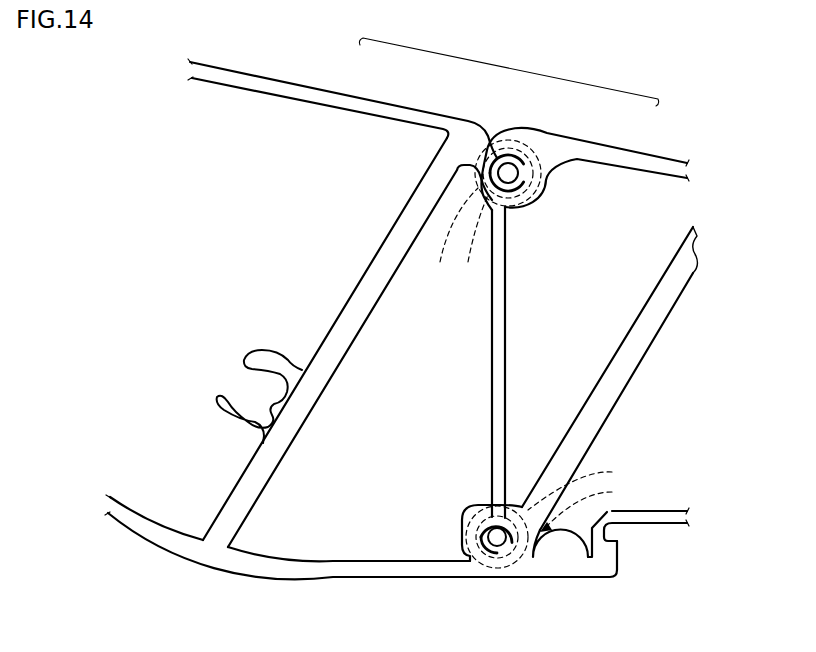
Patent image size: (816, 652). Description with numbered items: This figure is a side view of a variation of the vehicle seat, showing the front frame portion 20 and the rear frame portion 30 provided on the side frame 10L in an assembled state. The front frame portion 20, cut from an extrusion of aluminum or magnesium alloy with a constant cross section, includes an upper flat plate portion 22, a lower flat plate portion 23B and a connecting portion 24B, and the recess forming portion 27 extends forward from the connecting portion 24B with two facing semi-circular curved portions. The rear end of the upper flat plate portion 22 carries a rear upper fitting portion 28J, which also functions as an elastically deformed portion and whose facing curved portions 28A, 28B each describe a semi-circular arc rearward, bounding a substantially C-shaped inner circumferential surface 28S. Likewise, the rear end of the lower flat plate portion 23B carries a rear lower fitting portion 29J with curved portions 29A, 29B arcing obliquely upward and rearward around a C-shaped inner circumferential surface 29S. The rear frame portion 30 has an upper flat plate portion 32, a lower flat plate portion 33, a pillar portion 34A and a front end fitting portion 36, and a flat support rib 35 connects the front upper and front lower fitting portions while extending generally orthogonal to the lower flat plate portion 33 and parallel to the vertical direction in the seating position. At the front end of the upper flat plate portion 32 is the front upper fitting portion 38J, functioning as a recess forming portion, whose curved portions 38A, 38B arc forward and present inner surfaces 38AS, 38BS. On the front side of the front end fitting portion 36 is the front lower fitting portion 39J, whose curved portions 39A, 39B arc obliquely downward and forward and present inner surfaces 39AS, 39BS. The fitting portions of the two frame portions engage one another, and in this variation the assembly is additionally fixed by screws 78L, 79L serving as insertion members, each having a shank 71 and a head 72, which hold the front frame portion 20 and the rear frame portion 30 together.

The side frame 10L is at (508, 72).
The front frame portion 20 is at (355, 96).
The upper flat plate portion 22 is at (252, 84).
The lower flat plate portion 23B is at (333, 562).
The connecting portion 24B is at (355, 312).
The recess forming portion 27 is at (229, 346).
The rear upper fitting portion 28J is at (411, 170).
The curved portion 28B is at (507, 156).
The inner circumferential surface 28S is at (517, 167).
The curved portion 28A is at (473, 189).
The rear lower fitting portion 29J is at (432, 496).
The curved portion 29B is at (500, 520).
The inner circumferential surface 29S is at (490, 527).
The curved portion 29A is at (477, 523).
The rear frame portion 30 is at (619, 148).
The upper flat plate portion 32 is at (688, 172).
The lower flat plate portion 33 is at (688, 515).
The pillar portion 34A is at (630, 355).
The support rib 35 is at (491, 352).
The front end fitting portion 36 is at (610, 545).
The front upper fitting portion 38J is at (549, 221).
The curved portion 38B is at (546, 167).
The inner surface 38BS is at (532, 186).
The inner surface 38AS is at (518, 204).
The curved portion 38A is at (506, 215).
The front lower fitting portion 39J is at (515, 567).
The curved portion 39A is at (462, 518).
The inner surface 39AS is at (478, 558).
The inner surface 39BS is at (522, 567).
The curved portion 39B is at (553, 558).
The shank 71 is at (534, 360).
The head 72 is at (549, 352).
The screw 78L is at (534, 360).
The screw 79L is at (643, 455).